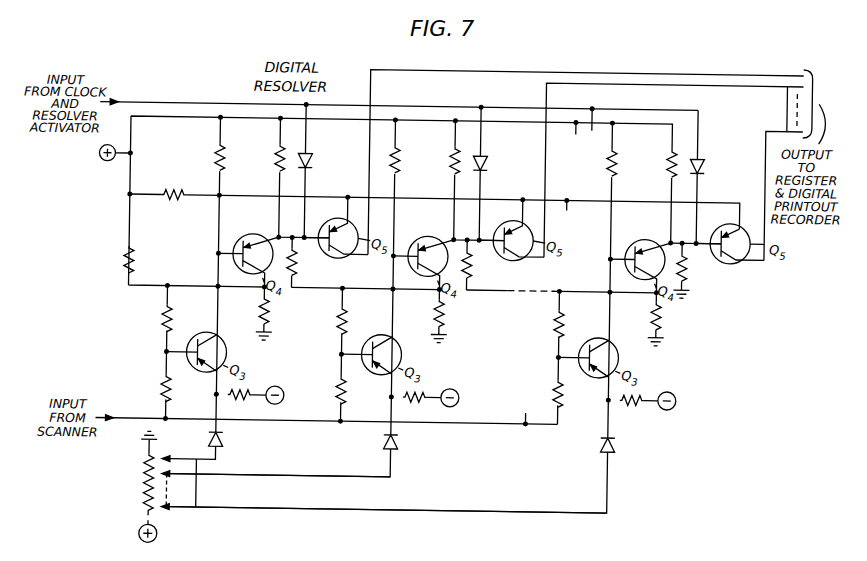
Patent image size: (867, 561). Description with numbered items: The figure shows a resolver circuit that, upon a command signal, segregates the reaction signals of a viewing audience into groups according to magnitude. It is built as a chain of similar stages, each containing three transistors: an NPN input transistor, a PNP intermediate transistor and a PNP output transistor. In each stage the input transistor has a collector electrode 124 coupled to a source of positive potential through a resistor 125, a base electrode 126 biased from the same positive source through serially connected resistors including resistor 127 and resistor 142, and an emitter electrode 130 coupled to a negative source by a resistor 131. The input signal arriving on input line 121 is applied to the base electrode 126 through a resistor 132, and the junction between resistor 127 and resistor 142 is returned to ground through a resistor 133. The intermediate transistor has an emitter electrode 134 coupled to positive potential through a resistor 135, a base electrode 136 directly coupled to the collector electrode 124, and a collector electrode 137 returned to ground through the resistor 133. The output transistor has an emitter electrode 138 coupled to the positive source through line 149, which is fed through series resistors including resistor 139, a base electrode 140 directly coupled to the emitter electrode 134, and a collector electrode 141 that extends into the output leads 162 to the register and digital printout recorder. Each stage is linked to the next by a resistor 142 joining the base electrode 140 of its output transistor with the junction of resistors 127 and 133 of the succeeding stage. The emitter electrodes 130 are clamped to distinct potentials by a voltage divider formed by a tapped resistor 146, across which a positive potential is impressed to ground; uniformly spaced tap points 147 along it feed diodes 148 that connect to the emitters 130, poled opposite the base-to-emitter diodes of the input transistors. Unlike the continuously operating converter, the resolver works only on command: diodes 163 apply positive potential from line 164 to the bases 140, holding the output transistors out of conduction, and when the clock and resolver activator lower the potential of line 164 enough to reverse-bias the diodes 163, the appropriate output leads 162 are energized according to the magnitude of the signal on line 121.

The input line 121 is at (122, 417).
The collector electrode 124 is at (225, 347).
The resistor 125 is at (225, 153).
The base electrode 126 is at (196, 334).
The resistor 127 is at (165, 321).
The emitter electrode 130 is at (212, 370).
The resistor 131 is at (236, 397).
The resistor 132 is at (165, 386).
The resistor 133 is at (263, 309).
The emitter electrode 134 is at (255, 240).
The resistor 135 is at (279, 167).
The base electrode 136 is at (246, 243).
The collector electrode 137 is at (252, 273).
The emitter electrode 138 is at (344, 221).
The resistor 139 is at (183, 186).
The base electrode 140 is at (325, 248).
The collector electrode 141 is at (347, 252).
The resistor 142 is at (134, 268).
The tapped resistor 146 is at (148, 487).
The tap points 147 is at (384, 486).
The diodes 148 is at (227, 439).
The line 149 is at (237, 196).
The output leads 162 is at (783, 118).
The diodes 163 is at (313, 156).
The line 164 is at (144, 102).